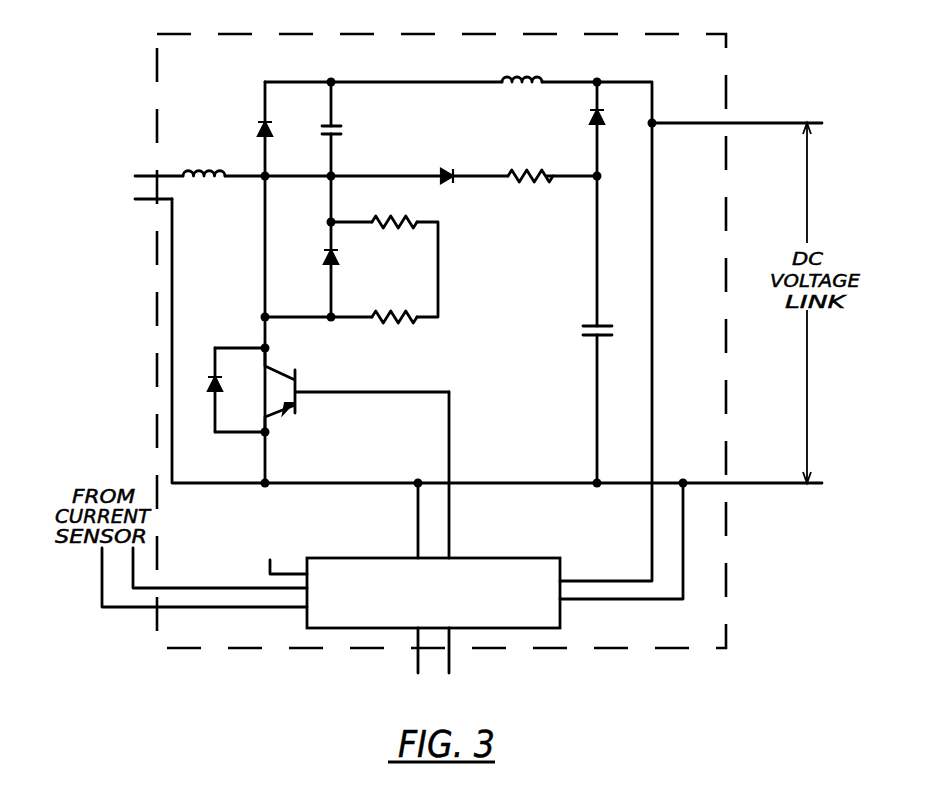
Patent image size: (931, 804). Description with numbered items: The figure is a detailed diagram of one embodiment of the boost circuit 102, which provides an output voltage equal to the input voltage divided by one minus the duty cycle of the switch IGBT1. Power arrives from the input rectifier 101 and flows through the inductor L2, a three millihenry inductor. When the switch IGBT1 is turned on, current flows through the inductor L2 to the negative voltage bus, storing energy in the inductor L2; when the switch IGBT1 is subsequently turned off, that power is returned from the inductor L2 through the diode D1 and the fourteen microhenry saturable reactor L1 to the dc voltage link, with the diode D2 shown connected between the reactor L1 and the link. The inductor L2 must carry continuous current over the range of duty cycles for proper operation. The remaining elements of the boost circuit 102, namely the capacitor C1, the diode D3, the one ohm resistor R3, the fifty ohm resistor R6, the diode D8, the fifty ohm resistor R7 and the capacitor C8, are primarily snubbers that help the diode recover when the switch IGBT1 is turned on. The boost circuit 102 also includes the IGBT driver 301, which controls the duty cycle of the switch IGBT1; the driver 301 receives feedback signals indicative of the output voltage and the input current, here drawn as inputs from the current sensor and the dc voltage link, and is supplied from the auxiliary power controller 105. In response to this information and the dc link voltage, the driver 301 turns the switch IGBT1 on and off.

The boost circuit 102 is at (735, 58).
The IGBT driver 301 is at (527, 557).
The input rectifier 101 is at (120, 195).
The auxiliary power controller 105 is at (467, 674).
The saturable reactor L1 is at (522, 63).
The inductor L2 is at (204, 158).
The diode D1 is at (285, 128).
The diode D2 is at (615, 113).
The diode D3 is at (450, 163).
The diode D8 is at (350, 260).
The capacitor C1 is at (351, 128).
The capacitor C8 is at (580, 327).
The resistor R3 is at (530, 163).
The resistor R6 is at (394, 209).
The resistor R7 is at (394, 303).
The switch IGBT1 is at (357, 386).